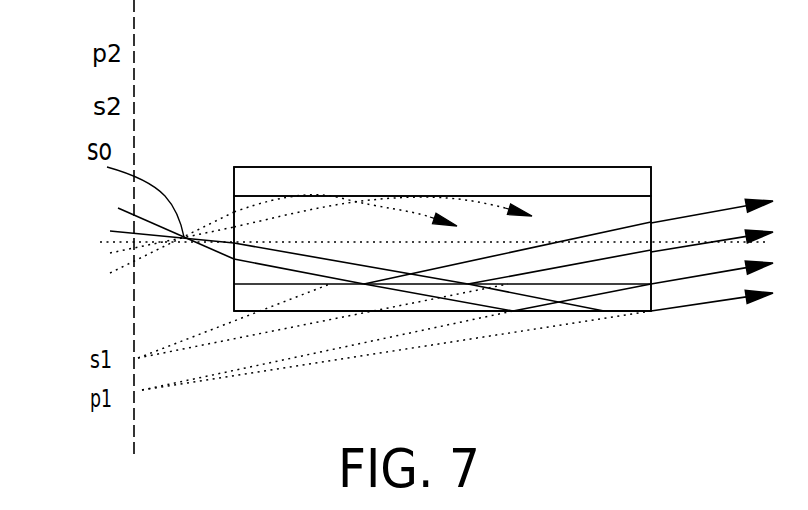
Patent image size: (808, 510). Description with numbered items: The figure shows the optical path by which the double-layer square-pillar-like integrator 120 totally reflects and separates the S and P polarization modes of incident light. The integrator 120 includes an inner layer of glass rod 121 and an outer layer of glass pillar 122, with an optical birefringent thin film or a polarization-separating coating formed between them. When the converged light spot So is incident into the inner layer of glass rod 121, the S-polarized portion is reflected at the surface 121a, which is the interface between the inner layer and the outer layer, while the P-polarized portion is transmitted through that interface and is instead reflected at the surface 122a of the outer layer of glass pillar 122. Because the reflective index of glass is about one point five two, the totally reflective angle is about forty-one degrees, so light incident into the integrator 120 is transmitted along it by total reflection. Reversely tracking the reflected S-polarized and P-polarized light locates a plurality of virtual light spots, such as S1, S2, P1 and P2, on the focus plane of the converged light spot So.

The double-layer square-pillar-like integrator 120 is at (475, 102).
The inner layer of glass rod 121 is at (602, 262).
The surface of the inner layer of glass rod 121a is at (310, 284).
The outer layer of glass pillar 122 is at (565, 182).
The surface of the outer layer of glass pillar 122a is at (513, 311).